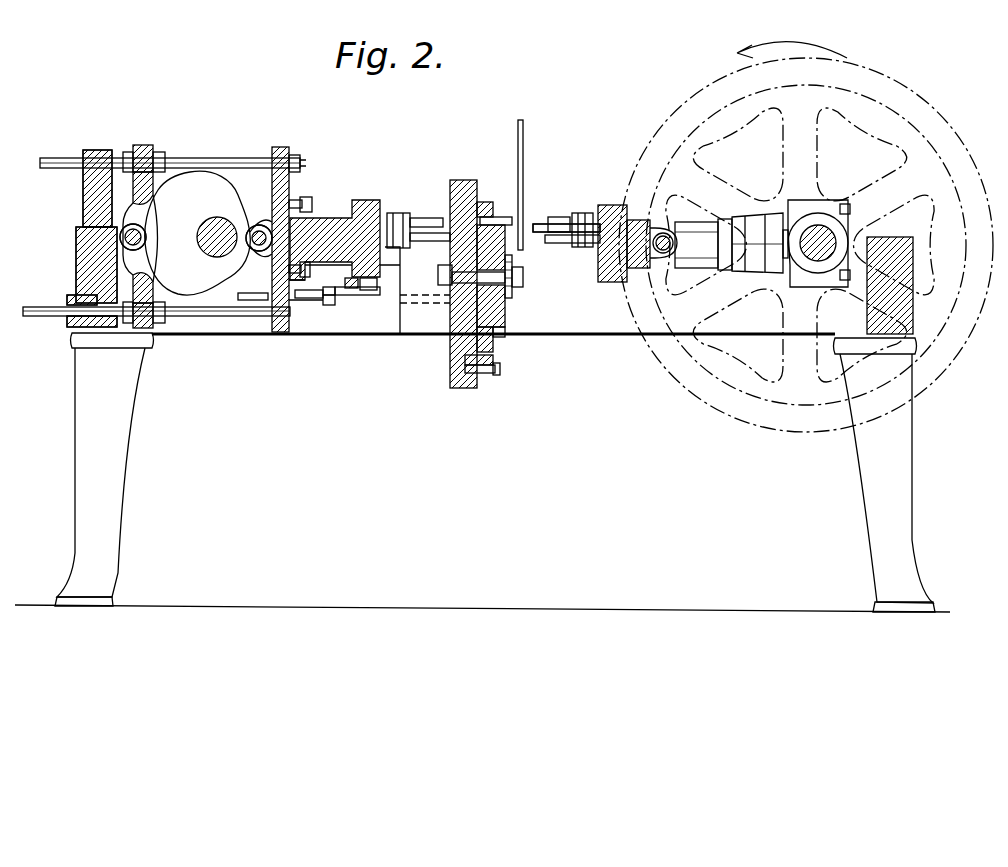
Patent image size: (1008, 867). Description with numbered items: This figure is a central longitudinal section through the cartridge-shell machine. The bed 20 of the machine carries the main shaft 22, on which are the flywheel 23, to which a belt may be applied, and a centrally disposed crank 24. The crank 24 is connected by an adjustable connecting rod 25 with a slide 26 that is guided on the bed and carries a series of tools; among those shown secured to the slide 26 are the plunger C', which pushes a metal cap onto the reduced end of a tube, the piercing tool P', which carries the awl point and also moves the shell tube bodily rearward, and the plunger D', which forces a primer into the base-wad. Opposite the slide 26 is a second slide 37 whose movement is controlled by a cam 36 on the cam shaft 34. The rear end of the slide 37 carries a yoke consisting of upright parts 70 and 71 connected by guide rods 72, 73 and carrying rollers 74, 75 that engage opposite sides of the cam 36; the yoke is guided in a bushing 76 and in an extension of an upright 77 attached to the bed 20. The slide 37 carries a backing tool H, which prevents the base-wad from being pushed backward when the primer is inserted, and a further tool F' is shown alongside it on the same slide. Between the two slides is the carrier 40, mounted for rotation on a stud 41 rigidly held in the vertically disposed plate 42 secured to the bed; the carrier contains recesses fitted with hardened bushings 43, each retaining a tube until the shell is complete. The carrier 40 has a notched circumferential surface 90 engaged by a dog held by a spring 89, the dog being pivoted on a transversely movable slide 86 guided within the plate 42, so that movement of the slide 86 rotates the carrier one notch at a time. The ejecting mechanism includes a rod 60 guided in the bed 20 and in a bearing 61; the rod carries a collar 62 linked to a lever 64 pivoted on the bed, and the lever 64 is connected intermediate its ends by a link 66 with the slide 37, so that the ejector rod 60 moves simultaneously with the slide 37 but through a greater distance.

The bed 20 is at (77, 273).
The main shaft 22 is at (807, 217).
The flywheel 23 is at (881, 87).
The crank 24 is at (820, 228).
The adjustable connecting rod 25 is at (700, 233).
The slide 26 is at (611, 205).
The cam shaft 34 is at (203, 229).
The cam 36 is at (218, 188).
The slide 37 is at (370, 200).
The carrier 40 is at (450, 362).
The stud 41 is at (512, 297).
The vertically-disposed plate 42 is at (452, 343).
The hardened bushings 43 is at (500, 210).
The rod 60 is at (250, 300).
The bearing 61 is at (273, 334).
The collar 62 is at (310, 298).
The lever 64 is at (340, 295).
The link 66 is at (360, 295).
The upright part 70 is at (289, 184).
The upright part 71 is at (143, 145).
The guide rod 72 is at (205, 160).
The guide rod 73 is at (185, 317).
The roller 74 is at (253, 252).
The roller 75 is at (110, 247).
The bushing 76 is at (67, 323).
The upright 77 is at (83, 212).
The transversely-movable slide 86 is at (480, 373).
The spring 89 is at (499, 372).
The notched circumferential surface 90 is at (487, 202).
The backing tool H is at (427, 218).
The collar F' is at (400, 214).
The plunger C' is at (562, 208).
The piercing tool P' is at (566, 266).
The plunger D' is at (577, 271).